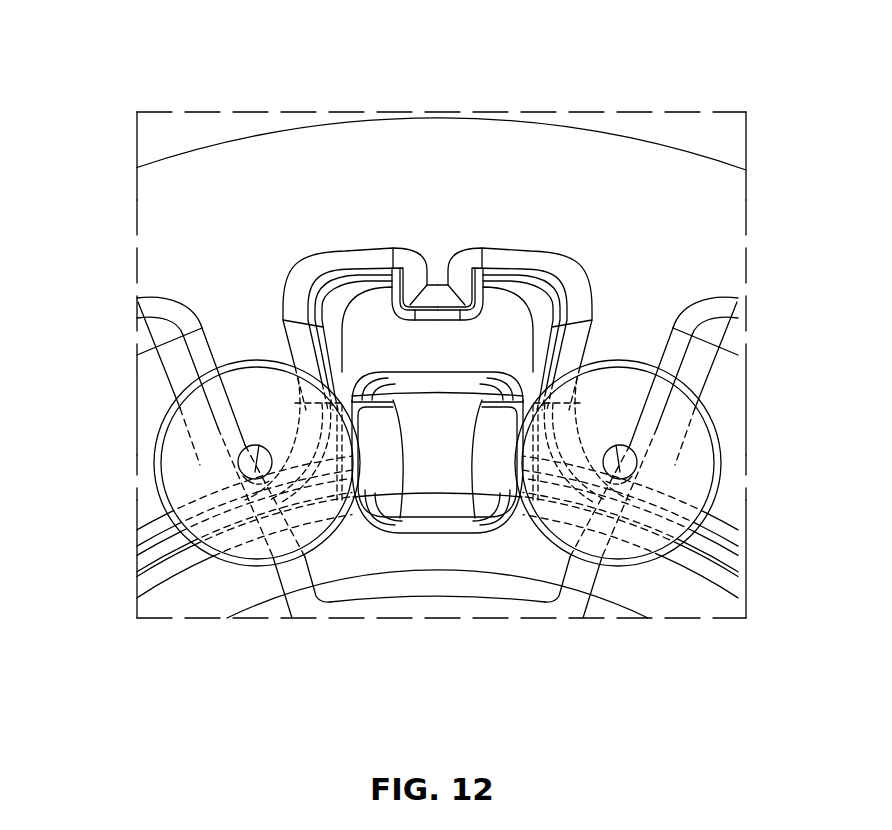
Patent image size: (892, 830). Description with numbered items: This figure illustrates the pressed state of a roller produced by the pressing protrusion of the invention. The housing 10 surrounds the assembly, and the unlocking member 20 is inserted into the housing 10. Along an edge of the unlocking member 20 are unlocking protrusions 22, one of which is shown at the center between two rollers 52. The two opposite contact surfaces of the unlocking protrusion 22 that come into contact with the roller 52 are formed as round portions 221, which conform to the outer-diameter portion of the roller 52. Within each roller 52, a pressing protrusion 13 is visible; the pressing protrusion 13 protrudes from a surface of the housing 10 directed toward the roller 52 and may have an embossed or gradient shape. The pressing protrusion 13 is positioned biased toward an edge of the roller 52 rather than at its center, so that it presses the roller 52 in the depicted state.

The housing 10 is at (445, 134).
The unlocking member 20 is at (687, 607).
The unlocking protrusion 22 is at (435, 465).
The round portion 221 is at (387, 462).
The roller 52 is at (157, 459).
The pressing protrusion 13 is at (247, 447).